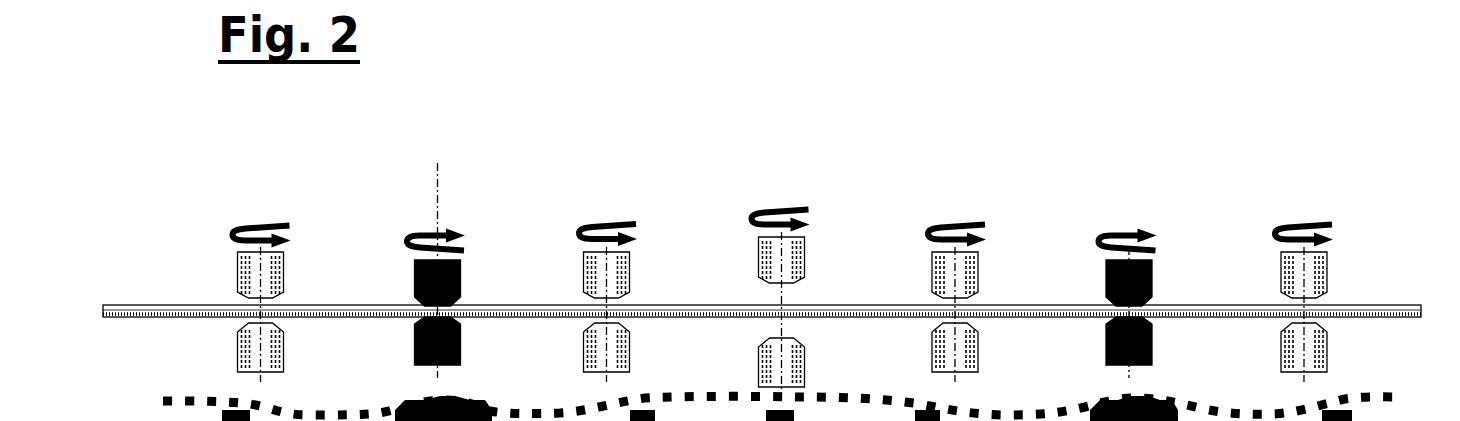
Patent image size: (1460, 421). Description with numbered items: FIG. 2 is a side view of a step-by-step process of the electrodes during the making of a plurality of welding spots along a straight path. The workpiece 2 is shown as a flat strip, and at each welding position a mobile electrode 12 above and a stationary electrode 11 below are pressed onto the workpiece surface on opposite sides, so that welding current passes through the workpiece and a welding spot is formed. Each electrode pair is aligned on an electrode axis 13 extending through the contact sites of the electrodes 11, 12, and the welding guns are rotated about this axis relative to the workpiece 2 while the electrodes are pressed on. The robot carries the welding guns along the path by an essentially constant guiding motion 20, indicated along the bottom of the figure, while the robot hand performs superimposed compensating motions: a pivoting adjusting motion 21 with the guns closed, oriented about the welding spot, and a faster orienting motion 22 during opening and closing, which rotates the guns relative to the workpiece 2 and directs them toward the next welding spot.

The workpiece 2 is at (127, 305).
The stationary electrode 11 is at (246, 352).
The mobile electrode 12 is at (255, 273).
The electrode axis 13 is at (441, 214).
The guiding motion 20 is at (1398, 395).
The adjusting motion 21 is at (422, 232).
The orienting motion 22 is at (262, 223).